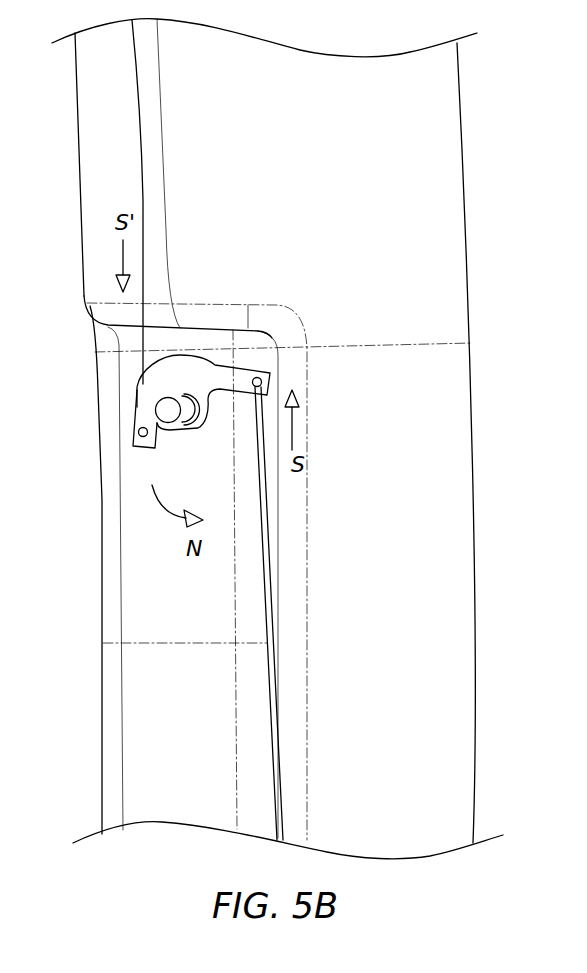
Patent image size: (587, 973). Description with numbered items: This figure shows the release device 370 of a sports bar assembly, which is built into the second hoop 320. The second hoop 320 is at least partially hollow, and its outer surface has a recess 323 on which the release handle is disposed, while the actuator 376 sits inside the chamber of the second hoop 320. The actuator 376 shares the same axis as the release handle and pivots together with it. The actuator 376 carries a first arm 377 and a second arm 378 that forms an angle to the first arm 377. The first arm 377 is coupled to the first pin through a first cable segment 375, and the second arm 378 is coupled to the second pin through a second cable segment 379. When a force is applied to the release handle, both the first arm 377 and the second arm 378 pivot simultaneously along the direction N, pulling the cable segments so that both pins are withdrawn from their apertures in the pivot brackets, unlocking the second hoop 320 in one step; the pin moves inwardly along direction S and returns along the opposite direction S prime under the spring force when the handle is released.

The second hoop 320 is at (348, 188).
The recess 323 is at (140, 625).
The release device 370 is at (92, 365).
The first cable segment 375 is at (267, 540).
The actuator 376 is at (180, 426).
The first arm 377 is at (218, 372).
The second arm 378 is at (135, 413).
The second cable segment 379 is at (141, 147).